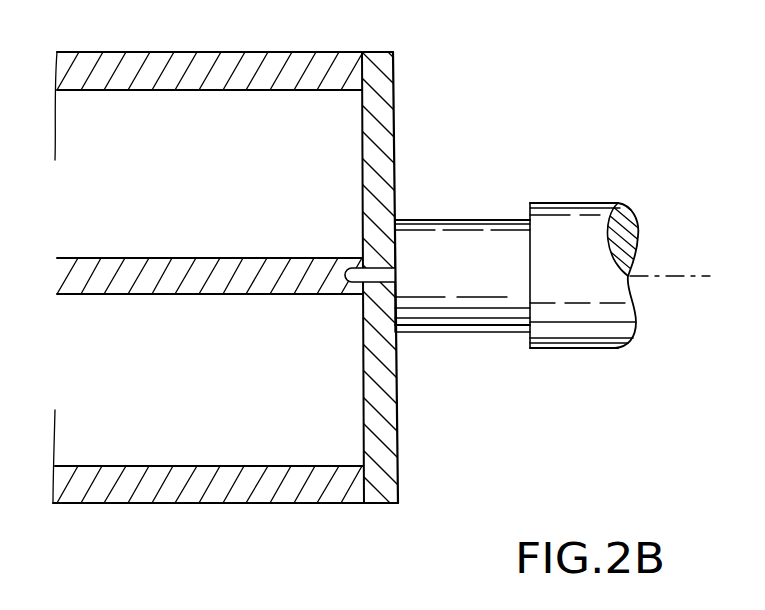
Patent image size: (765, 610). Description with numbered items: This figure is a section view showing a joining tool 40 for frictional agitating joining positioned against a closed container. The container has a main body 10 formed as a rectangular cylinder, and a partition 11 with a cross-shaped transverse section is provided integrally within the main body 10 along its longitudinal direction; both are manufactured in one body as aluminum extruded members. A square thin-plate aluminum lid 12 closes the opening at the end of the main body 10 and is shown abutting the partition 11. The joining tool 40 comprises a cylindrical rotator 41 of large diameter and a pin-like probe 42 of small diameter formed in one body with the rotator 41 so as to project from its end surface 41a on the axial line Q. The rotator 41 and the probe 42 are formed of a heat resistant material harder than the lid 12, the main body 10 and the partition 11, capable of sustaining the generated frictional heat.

The main body 10 is at (217, 62).
The partition 11 is at (187, 285).
The lid 12 is at (385, 405).
The joining tool 40 is at (617, 348).
The rotator 41 is at (495, 240).
The end surface 41a is at (393, 226).
The probe 42 is at (347, 282).
The axial line Q is at (687, 276).